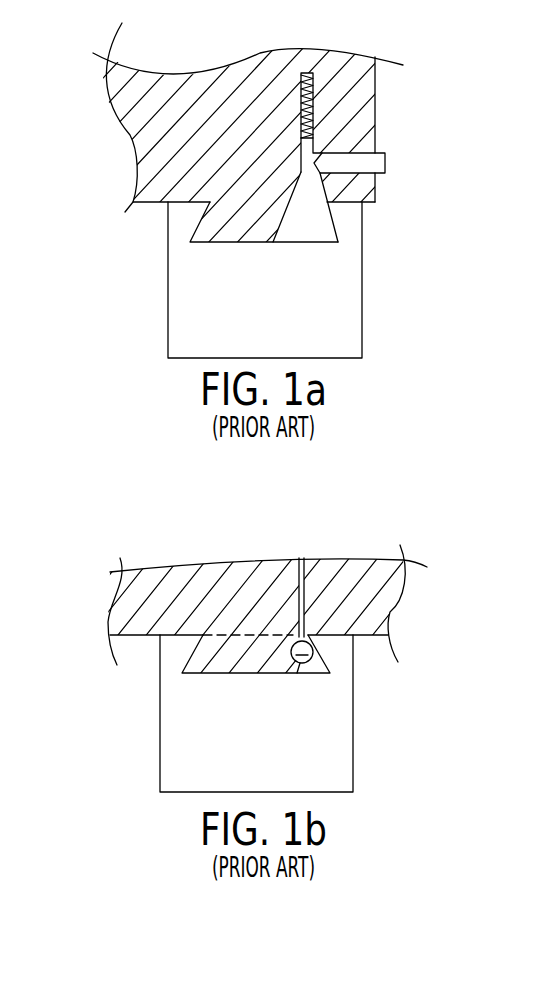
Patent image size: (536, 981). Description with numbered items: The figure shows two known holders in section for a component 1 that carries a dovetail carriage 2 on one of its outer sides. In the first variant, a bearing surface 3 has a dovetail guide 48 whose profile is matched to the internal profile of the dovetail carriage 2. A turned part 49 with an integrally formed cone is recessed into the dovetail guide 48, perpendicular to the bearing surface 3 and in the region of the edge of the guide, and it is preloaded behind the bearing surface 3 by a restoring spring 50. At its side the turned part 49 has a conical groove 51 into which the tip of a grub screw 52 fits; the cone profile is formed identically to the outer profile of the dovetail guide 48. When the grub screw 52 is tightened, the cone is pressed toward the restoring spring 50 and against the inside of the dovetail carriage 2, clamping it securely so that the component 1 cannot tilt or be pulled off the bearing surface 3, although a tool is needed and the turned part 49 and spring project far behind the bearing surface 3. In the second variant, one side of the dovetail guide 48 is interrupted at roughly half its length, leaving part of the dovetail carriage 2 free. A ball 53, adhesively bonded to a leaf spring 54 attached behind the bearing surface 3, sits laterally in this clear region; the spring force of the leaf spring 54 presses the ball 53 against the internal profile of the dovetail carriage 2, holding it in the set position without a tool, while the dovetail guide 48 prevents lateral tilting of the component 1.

In FIG. 1A, the component 1 is at (353, 358).
In FIG. 1B, the component 1 is at (342, 792).
In FIG. 1A, the dovetail carriage 2 is at (190, 228).
In FIG. 1B, the dovetail carriage 2 is at (185, 652).
In FIG. 1A, the bearing surface 3 is at (143, 205).
In FIG. 1B, the bearing surface 3 is at (373, 637).
In FIG. 1A, the dovetail guide 48 is at (217, 232).
In FIG. 1B, the dovetail guide 48 is at (197, 668).
In FIG. 1A, the turned part 49 is at (330, 230).
In FIG. 1A, the restoring spring 50 is at (314, 102).
In FIG. 1A, the conical groove 51 is at (300, 153).
In FIG. 1A, the grub screw 52 is at (385, 163).
In FIG. 1B, the ball 53 is at (302, 655).
In FIG. 1B, the leaf spring 54 is at (298, 583).